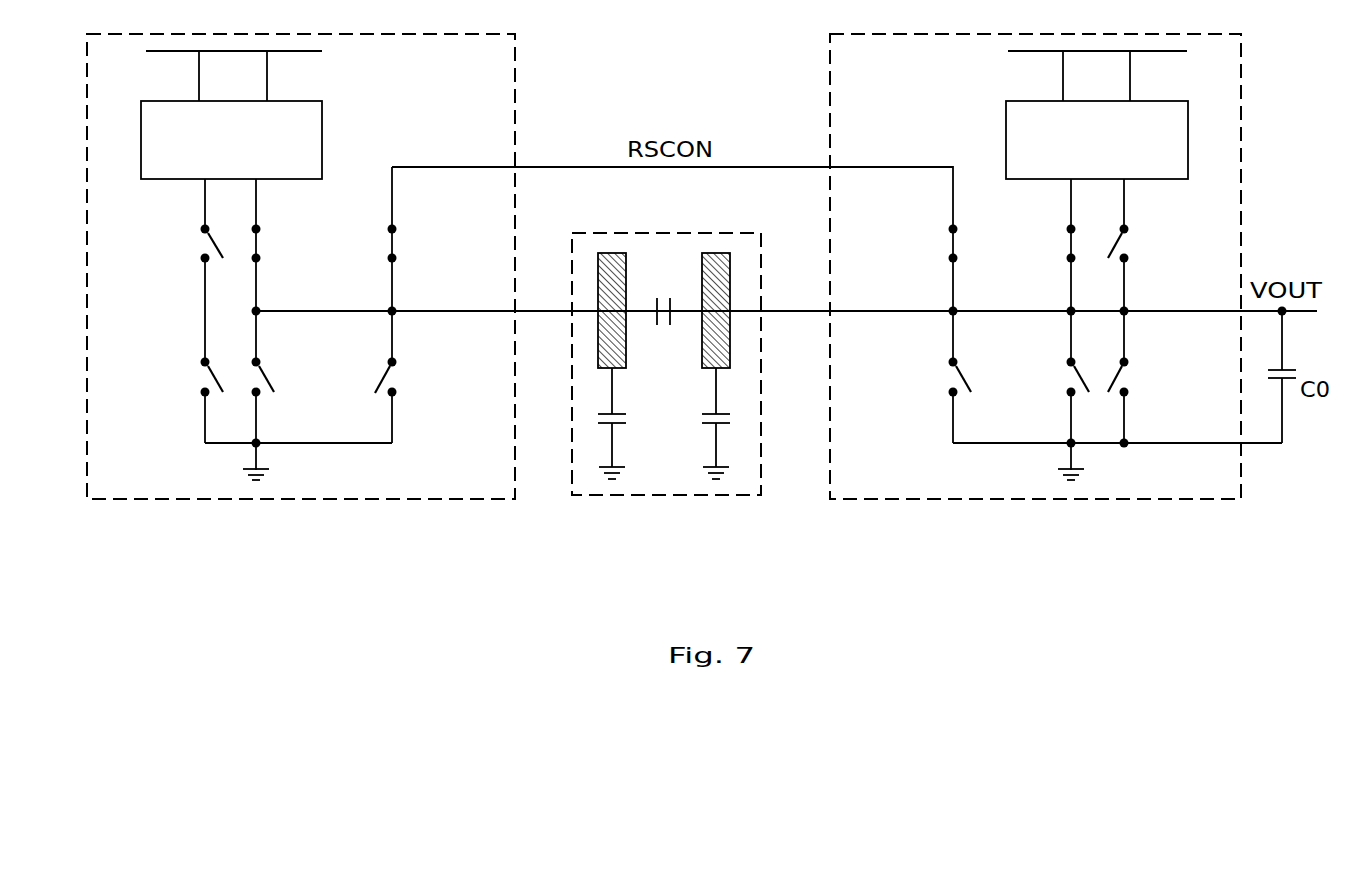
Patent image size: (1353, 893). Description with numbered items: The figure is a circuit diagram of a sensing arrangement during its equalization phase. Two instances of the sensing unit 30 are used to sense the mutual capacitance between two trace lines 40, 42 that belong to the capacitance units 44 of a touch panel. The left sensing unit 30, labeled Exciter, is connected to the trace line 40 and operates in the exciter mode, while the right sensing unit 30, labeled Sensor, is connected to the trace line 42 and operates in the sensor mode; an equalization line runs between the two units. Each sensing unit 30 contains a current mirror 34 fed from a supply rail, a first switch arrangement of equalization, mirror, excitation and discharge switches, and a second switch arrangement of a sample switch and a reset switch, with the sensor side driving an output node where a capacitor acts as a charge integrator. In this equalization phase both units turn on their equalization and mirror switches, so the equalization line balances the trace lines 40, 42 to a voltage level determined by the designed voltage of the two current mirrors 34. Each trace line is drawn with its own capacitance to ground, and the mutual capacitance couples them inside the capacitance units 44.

The sensing unit 30 is at (352, 286).
The current mirror 34 is at (282, 115).
The trace line 40 is at (600, 370).
The trace line 42 is at (730, 298).
The capacitance units 44 is at (668, 497).